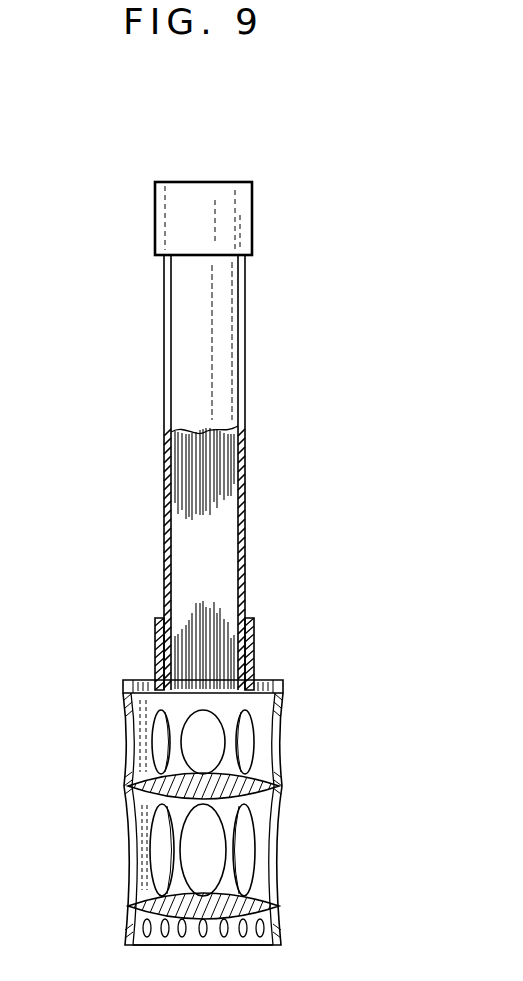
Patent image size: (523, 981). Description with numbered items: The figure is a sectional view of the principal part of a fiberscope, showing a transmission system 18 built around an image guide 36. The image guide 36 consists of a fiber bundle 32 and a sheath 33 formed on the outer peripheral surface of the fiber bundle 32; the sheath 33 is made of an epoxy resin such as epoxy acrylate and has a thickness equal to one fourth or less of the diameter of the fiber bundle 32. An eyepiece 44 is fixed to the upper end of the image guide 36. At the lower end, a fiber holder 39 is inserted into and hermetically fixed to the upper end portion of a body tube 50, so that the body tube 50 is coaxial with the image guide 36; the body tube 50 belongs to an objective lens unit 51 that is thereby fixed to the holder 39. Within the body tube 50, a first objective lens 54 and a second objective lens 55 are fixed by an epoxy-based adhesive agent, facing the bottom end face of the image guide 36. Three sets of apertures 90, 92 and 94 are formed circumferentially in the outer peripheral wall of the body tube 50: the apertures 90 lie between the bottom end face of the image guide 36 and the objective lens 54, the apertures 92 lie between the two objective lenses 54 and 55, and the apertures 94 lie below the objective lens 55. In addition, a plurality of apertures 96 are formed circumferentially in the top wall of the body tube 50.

The transmission system 18 is at (322, 313).
The eyepiece 44 is at (197, 200).
The image guide 36 is at (156, 352).
The fiber bundle 32 is at (178, 523).
The sheath 33 is at (239, 520).
The fiber holder 39 is at (253, 640).
The apertures 96 is at (140, 684).
The objective lens unit 51 is at (121, 750).
The body tube 50 is at (128, 790).
The apertures 90 is at (276, 742).
The first objective lens 54 is at (278, 783).
The apertures 92 is at (268, 845).
The second objective lens 55 is at (266, 907).
The apertures 94 is at (128, 932).